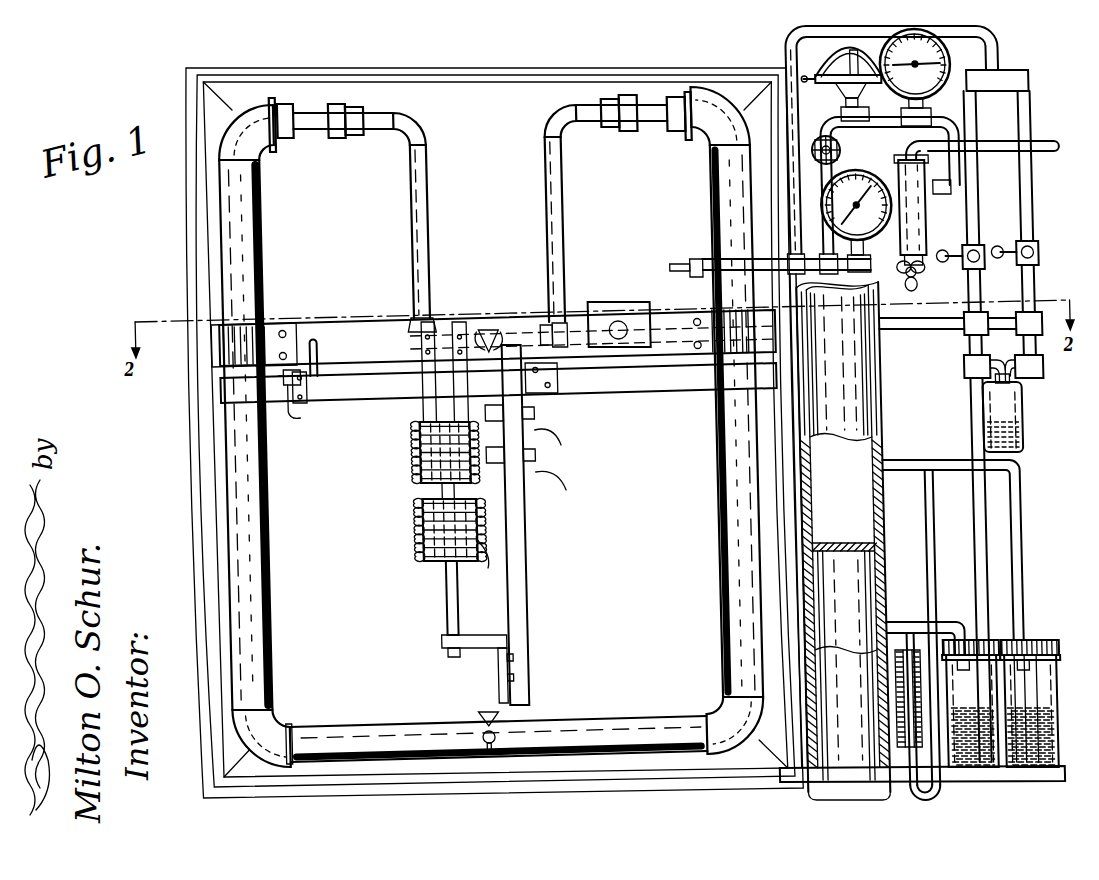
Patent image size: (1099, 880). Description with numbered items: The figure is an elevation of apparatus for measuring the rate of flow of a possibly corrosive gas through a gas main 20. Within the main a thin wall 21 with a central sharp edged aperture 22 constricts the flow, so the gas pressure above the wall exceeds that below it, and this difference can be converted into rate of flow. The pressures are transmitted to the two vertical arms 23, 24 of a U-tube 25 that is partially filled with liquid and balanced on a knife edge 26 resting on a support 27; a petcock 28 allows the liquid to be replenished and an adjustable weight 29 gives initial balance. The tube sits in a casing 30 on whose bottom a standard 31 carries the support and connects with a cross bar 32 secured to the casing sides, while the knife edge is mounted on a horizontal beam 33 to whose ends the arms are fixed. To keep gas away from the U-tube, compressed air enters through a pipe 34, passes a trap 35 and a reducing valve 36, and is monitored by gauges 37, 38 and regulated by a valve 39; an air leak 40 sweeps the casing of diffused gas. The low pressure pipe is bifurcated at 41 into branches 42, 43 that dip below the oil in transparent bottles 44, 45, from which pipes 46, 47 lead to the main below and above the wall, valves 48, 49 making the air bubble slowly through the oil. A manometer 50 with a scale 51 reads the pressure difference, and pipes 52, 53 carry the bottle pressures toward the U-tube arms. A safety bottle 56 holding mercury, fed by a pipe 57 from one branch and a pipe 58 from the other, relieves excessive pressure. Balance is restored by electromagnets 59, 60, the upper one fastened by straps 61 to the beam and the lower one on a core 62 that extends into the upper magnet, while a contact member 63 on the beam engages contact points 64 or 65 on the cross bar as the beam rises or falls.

The gas main 20 is at (874, 404).
The thin wall 21 is at (843, 558).
The sharp edged aperture 22 is at (843, 545).
The vertical arm of U-tube 23 is at (258, 245).
The vertical arm of U-tube 24 is at (712, 186).
The U-tube 25 is at (610, 722).
The knife edge 26 is at (482, 330).
The support 27 is at (506, 348).
The petcock 28 is at (470, 710).
The adjustable weight 29 is at (603, 303).
The casing 30 is at (188, 462).
The standard 31 is at (516, 538).
The cross bar 32 is at (636, 380).
The horizontal beam 33 is at (369, 333).
The compressed air pipe 34 is at (1052, 152).
The trap 35 is at (896, 170).
The reducing valve 36 is at (842, 88).
The gauge 37 is at (945, 62).
The gauge 38 is at (864, 240).
The valve 39 is at (838, 151).
The air leak 40 is at (677, 259).
The bifurcation 41 is at (990, 84).
The branch pipe 42 is at (976, 200).
The branch pipe 43 is at (1030, 228).
The bottle 44 is at (955, 770).
The bottle 45 is at (1020, 770).
The pipe 46 is at (950, 620).
The pipe 47 is at (1000, 545).
The valve 48 is at (980, 268).
The valve 49 is at (1036, 257).
The manometer 50 is at (915, 548).
The scale 51 is at (897, 634).
The pipe 52 is at (936, 332).
The pipe 53 is at (987, 334).
The safety bottle 56 is at (1015, 436).
The pipe 57 is at (1034, 393).
The pipe 58 is at (960, 375).
The electromagnet 59 is at (411, 451).
The electromagnet 60 is at (413, 514).
The straps 61 is at (448, 379).
The core 62 is at (434, 598).
The contact member 63 is at (314, 347).
The contact point 64 is at (284, 368).
The contact point 65 is at (300, 386).